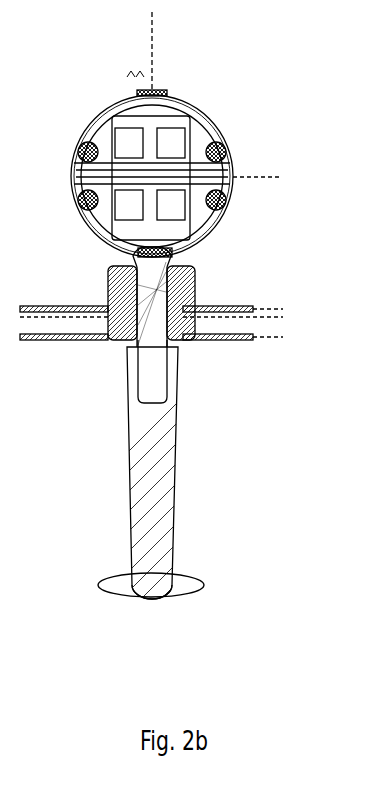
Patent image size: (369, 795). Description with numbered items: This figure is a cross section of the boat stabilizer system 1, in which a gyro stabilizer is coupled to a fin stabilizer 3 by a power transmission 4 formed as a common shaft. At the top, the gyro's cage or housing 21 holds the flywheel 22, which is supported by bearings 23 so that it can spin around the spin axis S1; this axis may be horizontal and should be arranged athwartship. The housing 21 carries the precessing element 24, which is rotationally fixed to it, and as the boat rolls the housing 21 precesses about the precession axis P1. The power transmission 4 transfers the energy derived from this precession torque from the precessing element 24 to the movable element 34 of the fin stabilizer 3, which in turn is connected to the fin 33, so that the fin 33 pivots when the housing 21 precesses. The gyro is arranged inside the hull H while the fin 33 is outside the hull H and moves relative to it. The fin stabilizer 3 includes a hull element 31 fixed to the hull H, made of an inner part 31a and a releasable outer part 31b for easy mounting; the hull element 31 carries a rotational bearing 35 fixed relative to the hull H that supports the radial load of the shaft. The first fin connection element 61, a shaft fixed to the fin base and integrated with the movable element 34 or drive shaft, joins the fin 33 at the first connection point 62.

The boat stabilizer system 1 is at (69, 34).
The precession axis P1 is at (164, 52).
The housing 21 is at (173, 100).
The flywheel 22 is at (188, 123).
The bearings 23 is at (78, 148).
The spin axis S1 is at (268, 174).
The power transmission 4 is at (200, 247).
The precessing element 24 is at (152, 297).
The movable element 34 is at (152, 297).
The rotational bearing 35 is at (190, 305).
The hull element 31 is at (250, 313).
The inner part 31a is at (258, 308).
The releasable outer part 31b is at (258, 337).
The hull H is at (235, 324).
The fin stabilizer 3 is at (156, 530).
The fin 33 is at (162, 466).
The first fin connection element 61 is at (147, 352).
The first connection point 62 is at (152, 371).